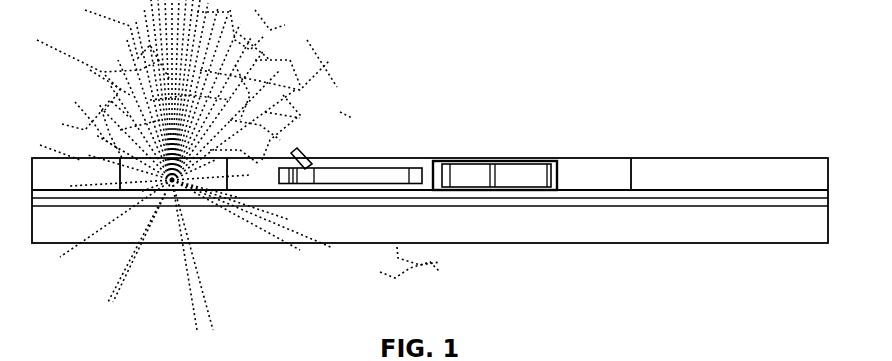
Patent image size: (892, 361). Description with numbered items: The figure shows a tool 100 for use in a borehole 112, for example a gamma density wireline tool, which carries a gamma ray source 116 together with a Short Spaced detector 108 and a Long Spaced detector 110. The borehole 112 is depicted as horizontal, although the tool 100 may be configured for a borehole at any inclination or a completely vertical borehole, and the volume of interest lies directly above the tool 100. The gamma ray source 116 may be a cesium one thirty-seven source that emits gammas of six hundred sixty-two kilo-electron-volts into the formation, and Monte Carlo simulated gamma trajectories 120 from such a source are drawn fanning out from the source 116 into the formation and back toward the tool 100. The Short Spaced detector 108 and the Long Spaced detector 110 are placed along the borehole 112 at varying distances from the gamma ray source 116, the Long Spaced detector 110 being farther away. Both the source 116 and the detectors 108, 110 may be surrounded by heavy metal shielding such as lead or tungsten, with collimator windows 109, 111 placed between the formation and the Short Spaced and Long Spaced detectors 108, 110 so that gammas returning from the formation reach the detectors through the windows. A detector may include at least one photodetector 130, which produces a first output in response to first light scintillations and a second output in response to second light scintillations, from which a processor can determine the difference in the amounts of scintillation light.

The tool 100 is at (613, 141).
The Short Spaced detector 108 is at (358, 156).
The collimator window 109 is at (308, 147).
The Long Spaced detector 110 is at (561, 155).
The collimator window 111 is at (460, 161).
The borehole 112 is at (712, 158).
The gamma ray source 116 is at (166, 190).
The gamma trajectories 120 is at (291, 50).
The photodetector 130 is at (523, 176).